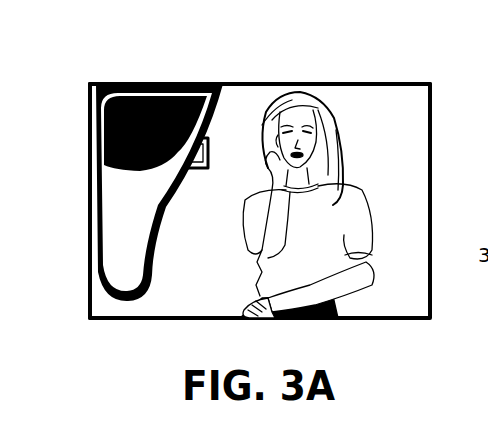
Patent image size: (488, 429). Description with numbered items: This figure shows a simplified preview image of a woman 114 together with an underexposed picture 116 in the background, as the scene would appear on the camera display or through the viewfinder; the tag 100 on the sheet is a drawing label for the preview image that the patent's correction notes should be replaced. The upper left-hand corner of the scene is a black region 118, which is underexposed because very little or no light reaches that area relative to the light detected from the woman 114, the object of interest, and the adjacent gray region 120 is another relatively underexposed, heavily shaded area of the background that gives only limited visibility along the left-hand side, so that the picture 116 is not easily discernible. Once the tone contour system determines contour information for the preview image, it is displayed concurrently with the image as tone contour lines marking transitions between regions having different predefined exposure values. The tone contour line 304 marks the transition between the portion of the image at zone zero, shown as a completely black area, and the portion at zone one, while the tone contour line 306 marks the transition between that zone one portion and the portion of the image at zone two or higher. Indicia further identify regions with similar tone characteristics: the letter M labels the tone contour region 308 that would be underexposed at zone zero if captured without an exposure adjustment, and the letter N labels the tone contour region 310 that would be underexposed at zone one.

The display screen 100 is at (433, 178).
The woman 114 is at (374, 203).
The picture 116 is at (212, 170).
The black region 118 is at (72, 140).
The gray region 120 is at (180, 243).
The tone contour line 304 is at (88, 165).
The tone contour line 306 is at (182, 188).
The tone contour region 308 is at (144, 68).
The tone contour region 310 is at (127, 273).